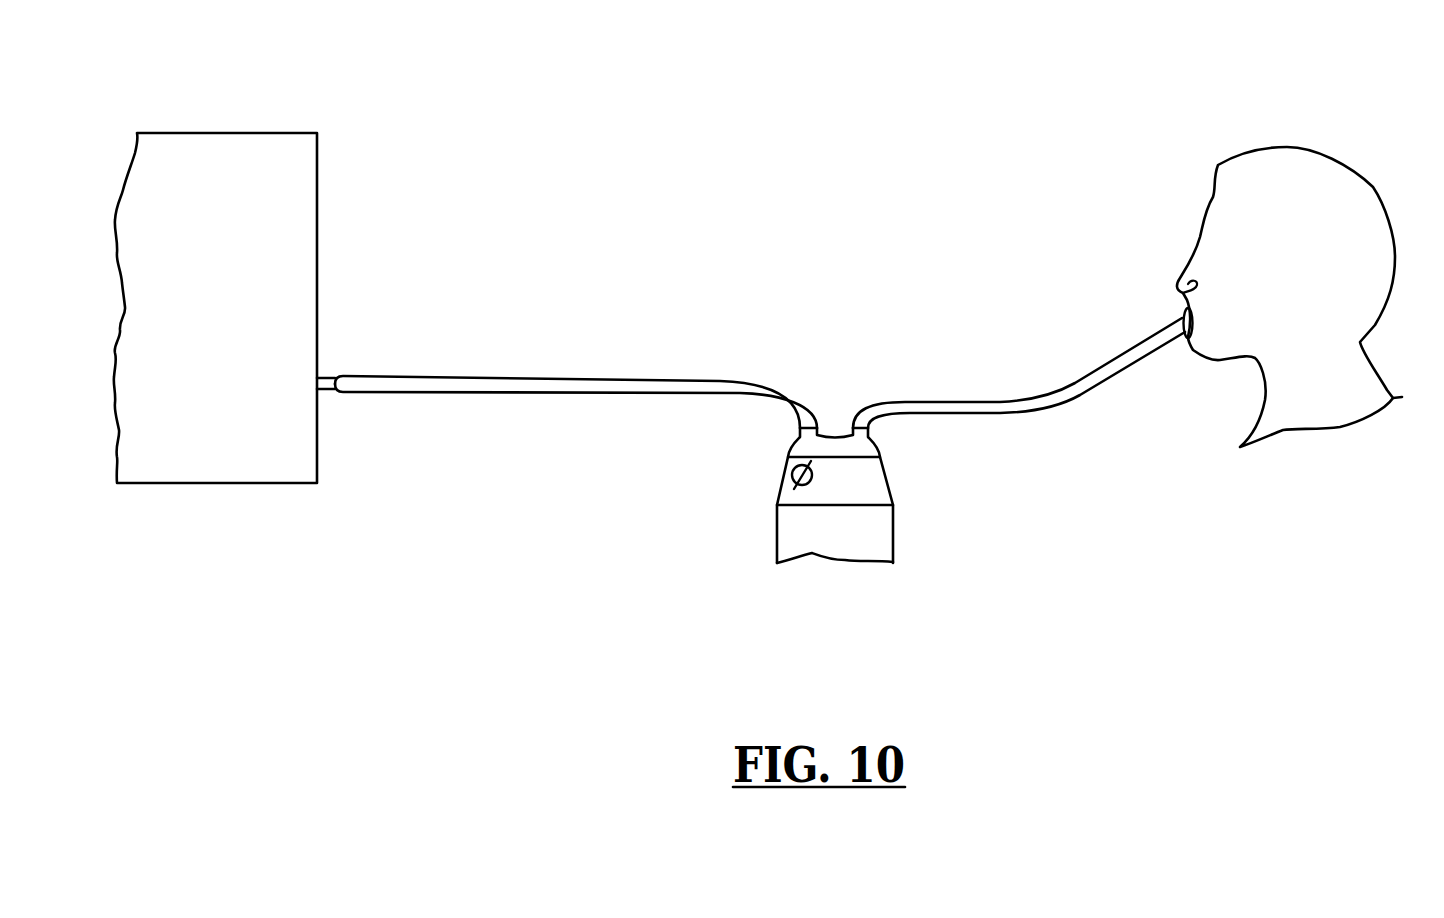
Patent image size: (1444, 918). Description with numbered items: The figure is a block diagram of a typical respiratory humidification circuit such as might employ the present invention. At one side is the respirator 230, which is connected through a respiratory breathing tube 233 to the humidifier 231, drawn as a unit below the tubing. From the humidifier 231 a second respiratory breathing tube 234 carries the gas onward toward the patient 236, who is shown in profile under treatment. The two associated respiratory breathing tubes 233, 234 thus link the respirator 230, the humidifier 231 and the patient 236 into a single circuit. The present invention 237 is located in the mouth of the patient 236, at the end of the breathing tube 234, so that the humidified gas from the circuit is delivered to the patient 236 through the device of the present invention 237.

The respirator 230 is at (215, 308).
The respiratory breathing tube 233 is at (570, 382).
The humidifier 231 is at (878, 478).
The respiratory breathing tube 234 is at (1057, 393).
The present invention 237 is at (1183, 340).
The patient 236 is at (1333, 197).